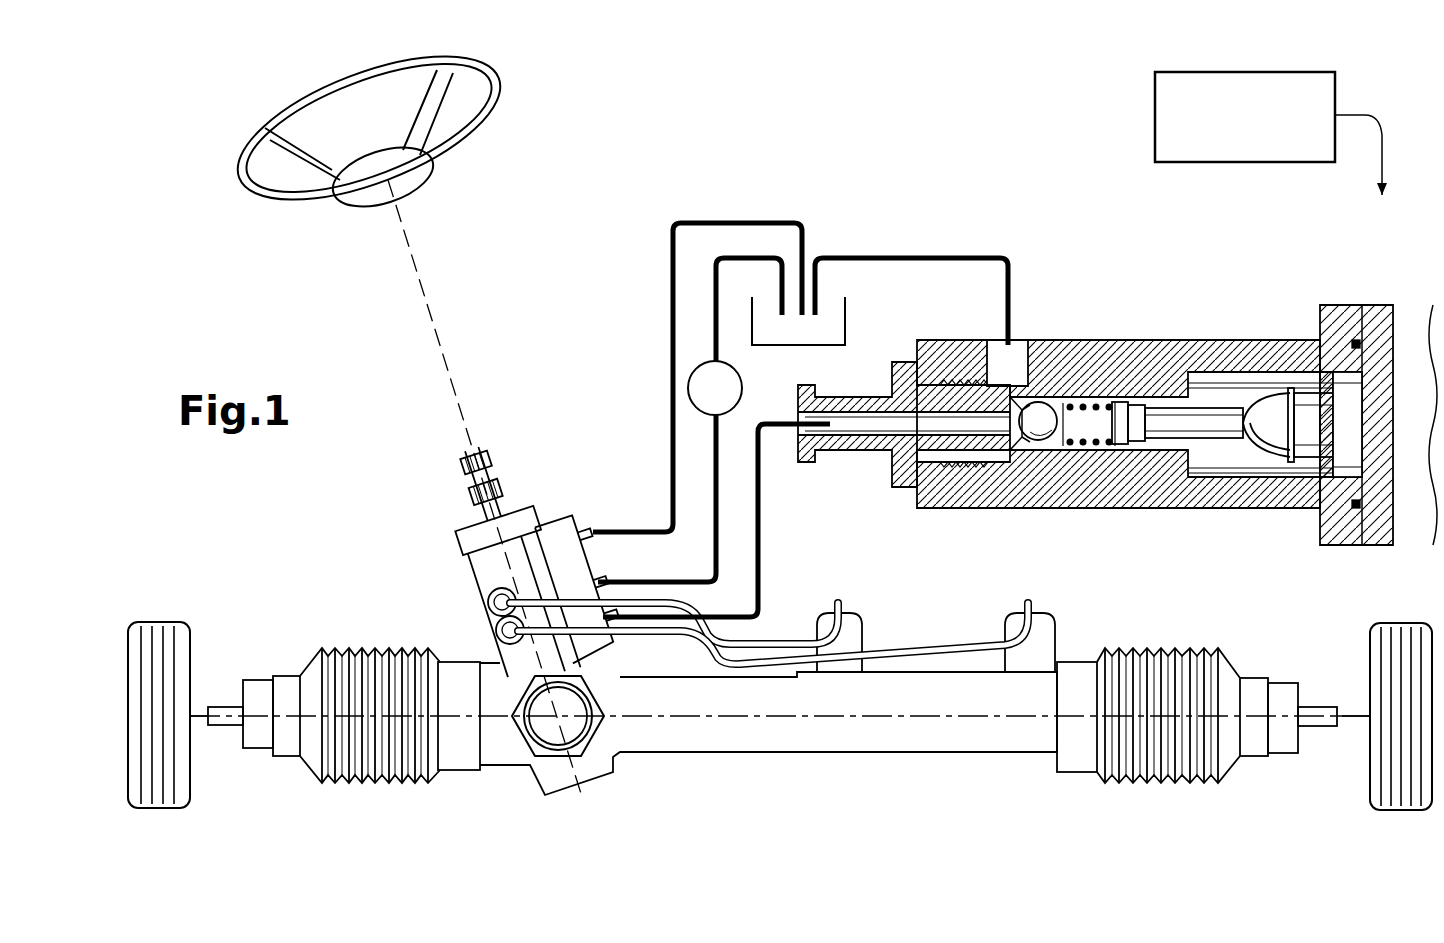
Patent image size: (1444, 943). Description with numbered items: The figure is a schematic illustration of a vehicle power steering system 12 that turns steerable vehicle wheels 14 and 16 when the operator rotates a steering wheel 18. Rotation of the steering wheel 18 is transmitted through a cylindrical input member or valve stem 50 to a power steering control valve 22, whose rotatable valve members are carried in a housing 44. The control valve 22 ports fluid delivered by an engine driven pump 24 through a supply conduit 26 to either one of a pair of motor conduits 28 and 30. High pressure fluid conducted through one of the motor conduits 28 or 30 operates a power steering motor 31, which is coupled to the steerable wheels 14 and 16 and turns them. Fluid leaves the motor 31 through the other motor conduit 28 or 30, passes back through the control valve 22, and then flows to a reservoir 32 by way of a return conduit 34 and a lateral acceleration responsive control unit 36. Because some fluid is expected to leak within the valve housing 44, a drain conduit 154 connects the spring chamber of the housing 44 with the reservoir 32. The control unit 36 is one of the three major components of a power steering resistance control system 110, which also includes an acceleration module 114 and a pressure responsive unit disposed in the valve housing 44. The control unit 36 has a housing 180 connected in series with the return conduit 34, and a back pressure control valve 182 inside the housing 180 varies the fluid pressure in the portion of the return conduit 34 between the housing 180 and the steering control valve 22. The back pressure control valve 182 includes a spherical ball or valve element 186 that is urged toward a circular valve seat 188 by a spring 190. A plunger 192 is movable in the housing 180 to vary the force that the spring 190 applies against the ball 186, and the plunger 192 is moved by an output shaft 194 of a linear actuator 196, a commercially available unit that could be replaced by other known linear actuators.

The vehicle power steering system 12 is at (985, 190).
The steerable vehicle wheel 14 is at (163, 615).
The steerable vehicle wheel 16 is at (1390, 645).
The steering wheel 18 is at (502, 88).
The power steering control valve 22 is at (468, 574).
The engine driven pump 24 is at (735, 376).
The supply conduit 26 is at (718, 440).
The motor conduit 28 is at (778, 640).
The motor conduit 30 is at (950, 645).
The power steering motor 31 is at (882, 740).
The reservoir 32 is at (845, 320).
The return conduit 34 is at (762, 512).
The lateral acceleration responsive control unit 36 is at (1233, 296).
The housing 44 is at (558, 520).
The valve stem 50 is at (490, 467).
The power steering resistance control system 110 is at (1078, 308).
The acceleration module 114 is at (1228, 154).
The drain conduit 154 is at (672, 292).
The housing 180 is at (1259, 355).
The back pressure control valve 182 is at (1128, 341).
The ball valve element 186 is at (1022, 428).
The valve seat 188 is at (1042, 442).
The spring 190 is at (1098, 455).
The plunger 192 is at (1215, 428).
The output shaft 194 is at (1272, 430).
The linear actuator 196 is at (1412, 508).